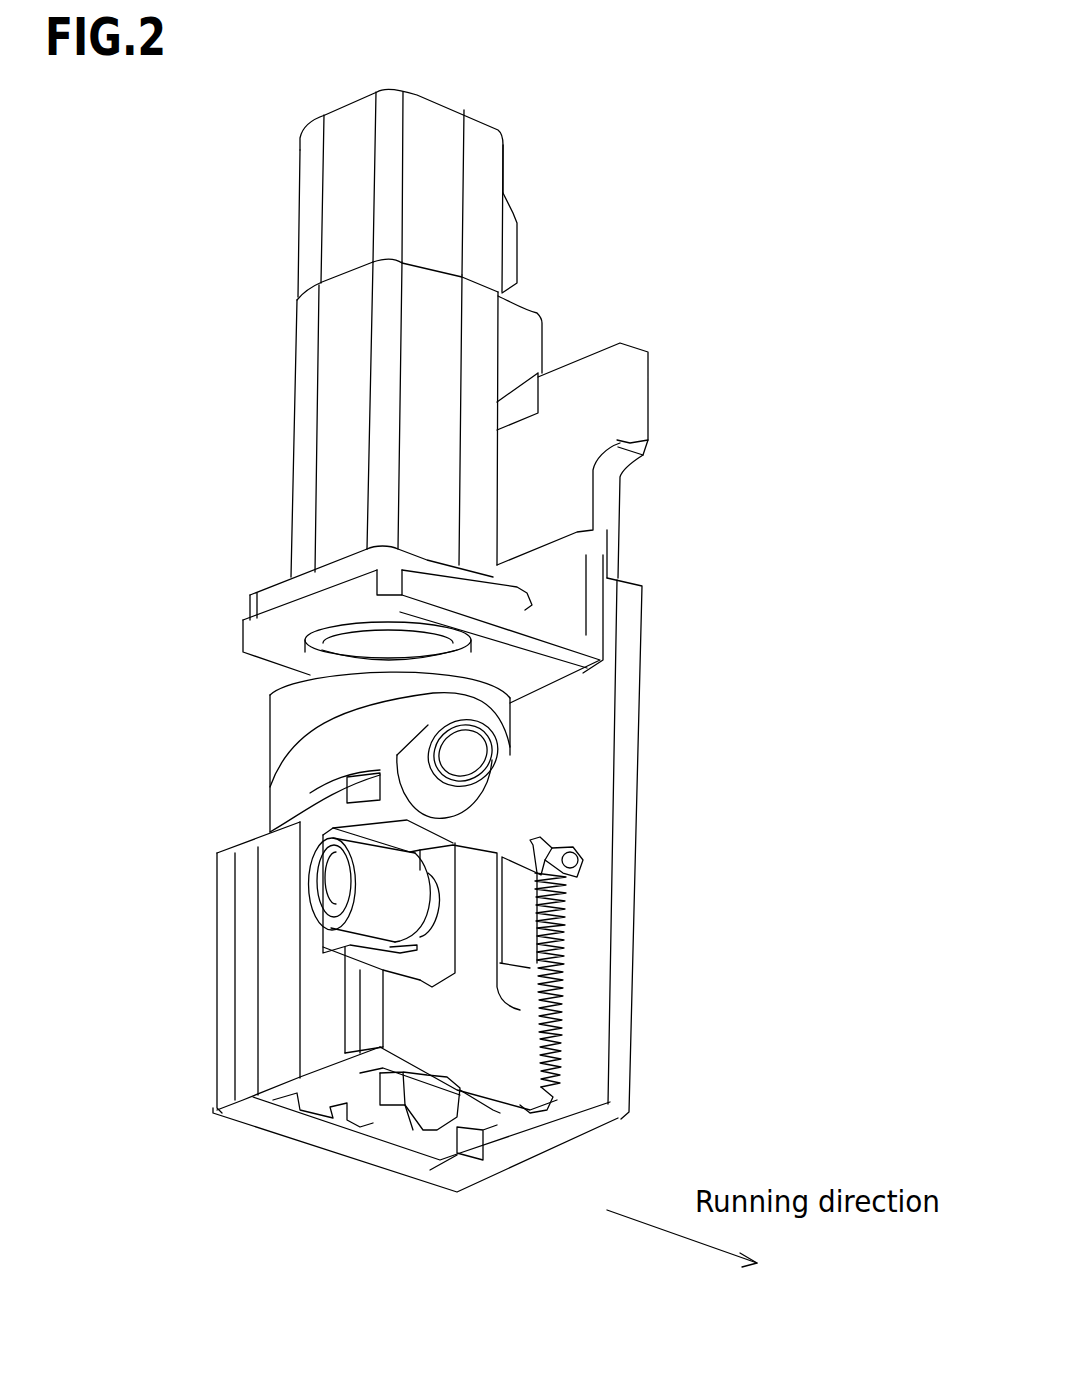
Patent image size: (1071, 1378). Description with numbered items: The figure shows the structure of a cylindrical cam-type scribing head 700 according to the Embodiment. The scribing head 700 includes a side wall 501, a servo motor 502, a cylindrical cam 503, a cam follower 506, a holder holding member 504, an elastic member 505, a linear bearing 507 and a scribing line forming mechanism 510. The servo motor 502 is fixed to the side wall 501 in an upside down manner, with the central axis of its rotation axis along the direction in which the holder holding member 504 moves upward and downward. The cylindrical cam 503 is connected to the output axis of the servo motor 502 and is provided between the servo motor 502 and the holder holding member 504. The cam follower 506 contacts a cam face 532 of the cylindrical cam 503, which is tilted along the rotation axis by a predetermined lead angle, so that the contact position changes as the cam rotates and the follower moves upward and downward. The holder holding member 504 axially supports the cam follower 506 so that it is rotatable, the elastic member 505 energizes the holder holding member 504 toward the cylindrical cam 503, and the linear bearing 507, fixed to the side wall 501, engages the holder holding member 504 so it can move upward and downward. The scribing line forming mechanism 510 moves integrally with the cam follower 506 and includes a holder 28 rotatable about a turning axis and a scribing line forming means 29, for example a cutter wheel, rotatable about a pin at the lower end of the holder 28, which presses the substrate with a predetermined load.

The cylindrical cam-type scribing head 700 is at (112, 175).
The servo motor 502 is at (438, 181).
The side wall 501 is at (630, 645).
The cylindrical cam 503 is at (282, 702).
The cam face 532 is at (313, 782).
The cam follower 506 is at (463, 802).
The elastic member 505 is at (567, 898).
The holder holding member 504 is at (520, 1030).
The linear bearing 507 is at (277, 1040).
The scribing line forming mechanism 510 is at (305, 1162).
The holder 28 is at (400, 1120).
The scribing line forming means 29 is at (410, 1127).